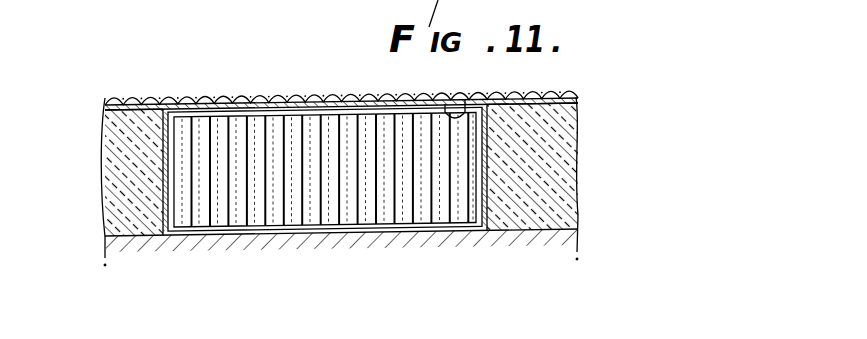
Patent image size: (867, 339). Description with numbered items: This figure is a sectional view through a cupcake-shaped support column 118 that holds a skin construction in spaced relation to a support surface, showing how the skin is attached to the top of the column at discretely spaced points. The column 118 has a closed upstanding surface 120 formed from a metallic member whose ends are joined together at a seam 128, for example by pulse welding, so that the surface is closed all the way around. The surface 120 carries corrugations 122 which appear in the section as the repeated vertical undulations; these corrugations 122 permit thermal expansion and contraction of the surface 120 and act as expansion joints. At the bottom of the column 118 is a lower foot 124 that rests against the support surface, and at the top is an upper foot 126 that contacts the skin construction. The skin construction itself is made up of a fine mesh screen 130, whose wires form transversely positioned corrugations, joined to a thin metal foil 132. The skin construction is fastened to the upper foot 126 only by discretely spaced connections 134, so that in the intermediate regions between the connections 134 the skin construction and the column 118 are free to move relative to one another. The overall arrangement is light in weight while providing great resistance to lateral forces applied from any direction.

The support column 118 is at (158, 164).
The closed upstanding surface 120 is at (221, 210).
The corrugations 122 is at (278, 208).
The lower foot 124 is at (464, 226).
The upper foot 126 is at (445, 105).
The seam 128 is at (352, 206).
The fine mesh screen 130 is at (226, 101).
The thin metal foil 132 is at (551, 101).
The discretely spaced connections 134 is at (180, 104).